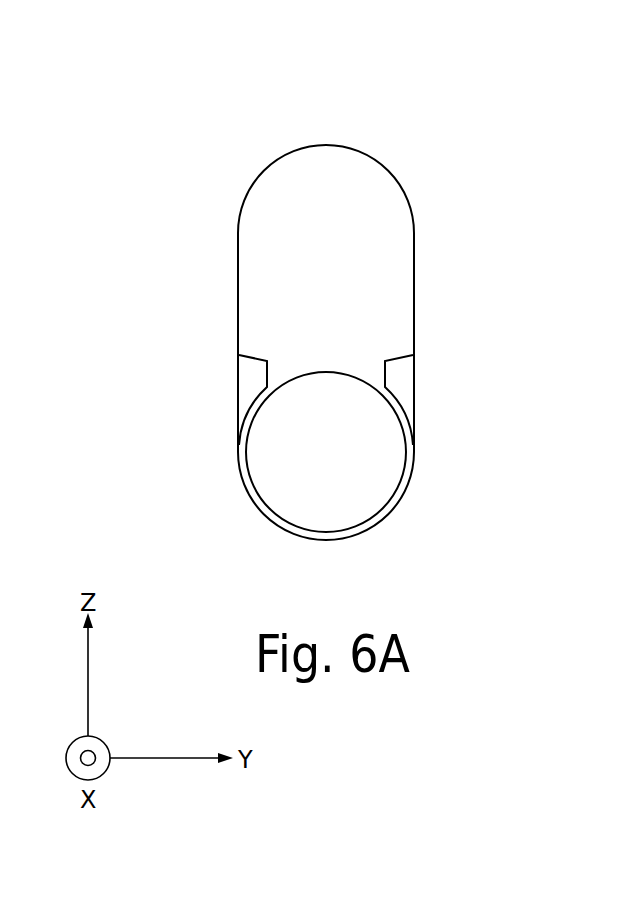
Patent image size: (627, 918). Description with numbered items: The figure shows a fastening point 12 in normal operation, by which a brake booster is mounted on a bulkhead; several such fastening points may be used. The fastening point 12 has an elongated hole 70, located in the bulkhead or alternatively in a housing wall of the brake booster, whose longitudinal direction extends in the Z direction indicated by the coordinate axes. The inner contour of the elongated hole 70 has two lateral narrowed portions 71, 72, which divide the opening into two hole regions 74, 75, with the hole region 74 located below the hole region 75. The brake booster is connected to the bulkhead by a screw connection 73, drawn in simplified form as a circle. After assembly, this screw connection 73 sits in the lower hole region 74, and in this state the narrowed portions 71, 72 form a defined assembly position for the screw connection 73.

The fastening point 12 is at (466, 167).
The elongated hole 70 is at (251, 188).
The lateral narrowed portion 71 is at (247, 380).
The lateral narrowed portion 72 is at (403, 382).
The screw connection 73 is at (274, 486).
The hole region 74 is at (414, 497).
The hole region 75 is at (378, 219).